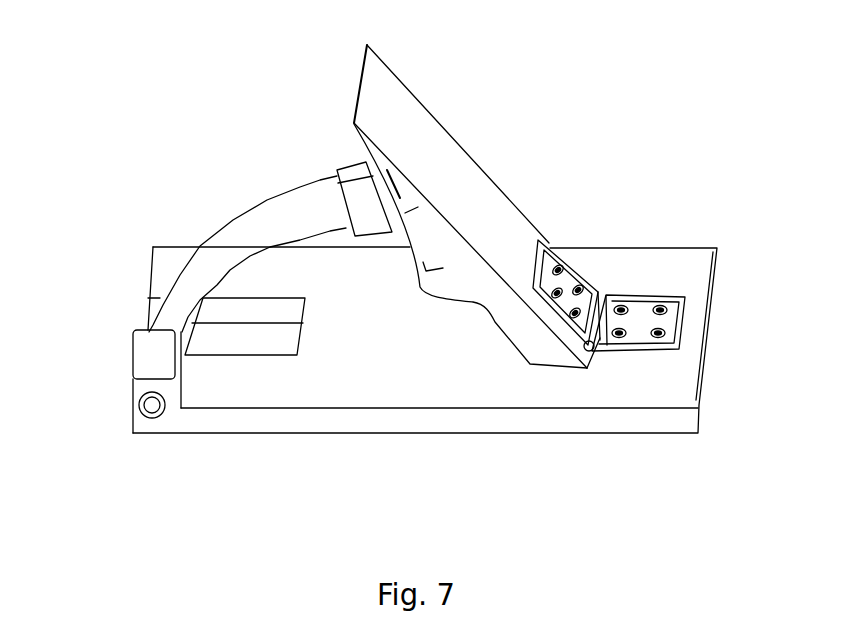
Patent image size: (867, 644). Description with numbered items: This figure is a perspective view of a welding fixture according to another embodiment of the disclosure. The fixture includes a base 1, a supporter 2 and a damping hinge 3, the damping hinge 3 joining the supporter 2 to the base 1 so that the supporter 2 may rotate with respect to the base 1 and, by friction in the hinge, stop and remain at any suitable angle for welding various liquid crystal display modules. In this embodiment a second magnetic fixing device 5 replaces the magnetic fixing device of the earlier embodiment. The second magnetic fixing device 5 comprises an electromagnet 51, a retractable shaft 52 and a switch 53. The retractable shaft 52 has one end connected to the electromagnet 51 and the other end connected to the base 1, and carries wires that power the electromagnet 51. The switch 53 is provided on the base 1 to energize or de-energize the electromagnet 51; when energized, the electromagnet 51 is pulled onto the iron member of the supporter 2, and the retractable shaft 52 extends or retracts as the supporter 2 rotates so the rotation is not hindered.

The base 1 is at (537, 398).
The supporter 2 is at (468, 180).
The damping hinge 3 is at (615, 290).
The second magnetic fixing device 5 is at (203, 290).
The electromagnet 51 is at (357, 175).
The retractable shaft 52 is at (228, 240).
The switch 53 is at (150, 405).